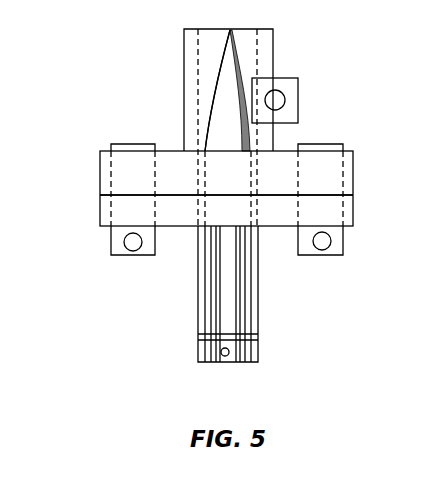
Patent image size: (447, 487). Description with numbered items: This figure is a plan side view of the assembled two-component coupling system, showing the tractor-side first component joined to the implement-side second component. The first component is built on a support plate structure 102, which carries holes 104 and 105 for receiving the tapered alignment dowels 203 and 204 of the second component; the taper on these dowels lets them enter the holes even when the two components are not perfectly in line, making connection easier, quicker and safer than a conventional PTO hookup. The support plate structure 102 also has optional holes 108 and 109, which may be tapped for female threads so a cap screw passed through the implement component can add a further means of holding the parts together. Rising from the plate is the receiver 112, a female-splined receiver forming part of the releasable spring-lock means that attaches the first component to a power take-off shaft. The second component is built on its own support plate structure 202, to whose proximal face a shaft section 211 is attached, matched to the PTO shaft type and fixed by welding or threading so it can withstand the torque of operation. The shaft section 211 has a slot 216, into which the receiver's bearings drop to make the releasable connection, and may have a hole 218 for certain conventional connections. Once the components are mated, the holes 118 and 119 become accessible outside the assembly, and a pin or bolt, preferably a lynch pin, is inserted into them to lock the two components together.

The support plate structure 102 is at (100, 172).
The hole 104 is at (345, 240).
The hole 105 is at (112, 237).
The optional hole 108 is at (280, 78).
The optional hole 109 is at (285, 100).
The receiver 112 is at (185, 55).
The hole 118 is at (323, 243).
The hole 119 is at (132, 245).
The support plate structure 202 is at (100, 210).
The alignment dowel 203 is at (171, 90).
The alignment dowel 204 is at (208, 107).
The shaft section 211 is at (198, 300).
The slot 216 is at (198, 340).
The hole 218 is at (225, 360).